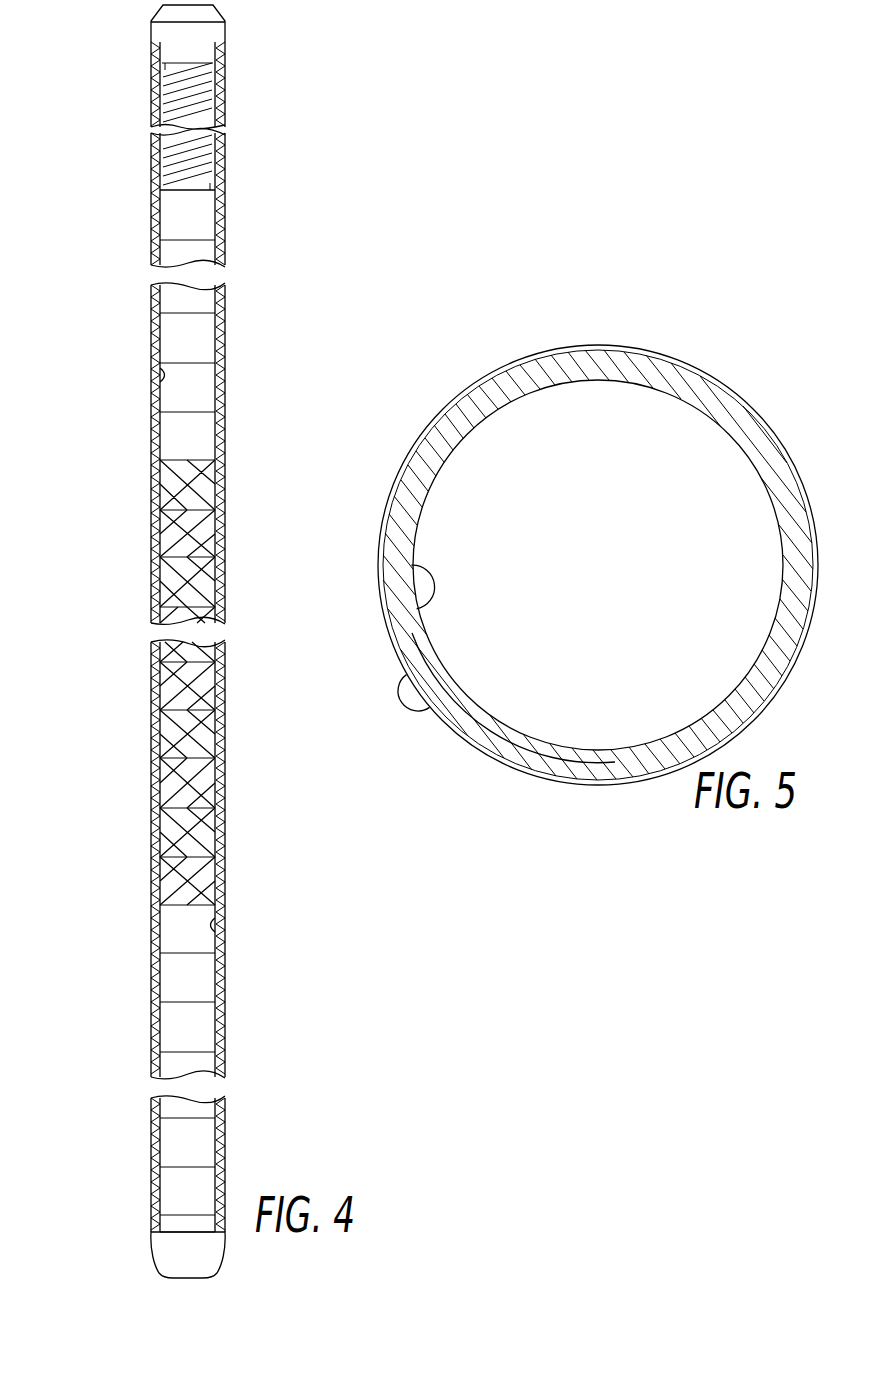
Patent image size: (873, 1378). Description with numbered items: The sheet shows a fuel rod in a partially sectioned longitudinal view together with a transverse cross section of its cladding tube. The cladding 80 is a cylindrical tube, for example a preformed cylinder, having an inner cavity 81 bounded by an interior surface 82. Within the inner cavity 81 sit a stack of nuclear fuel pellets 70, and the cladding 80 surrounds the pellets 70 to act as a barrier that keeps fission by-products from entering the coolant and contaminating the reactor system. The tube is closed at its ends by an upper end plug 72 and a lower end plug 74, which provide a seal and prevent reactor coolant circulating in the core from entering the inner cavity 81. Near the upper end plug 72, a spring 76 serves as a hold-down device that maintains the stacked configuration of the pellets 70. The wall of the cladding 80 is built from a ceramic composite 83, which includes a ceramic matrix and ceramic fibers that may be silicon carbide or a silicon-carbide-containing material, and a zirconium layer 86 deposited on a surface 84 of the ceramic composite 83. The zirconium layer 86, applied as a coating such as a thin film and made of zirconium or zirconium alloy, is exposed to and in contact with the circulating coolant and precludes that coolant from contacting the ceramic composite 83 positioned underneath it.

In FIG. 4, the nuclear fuel pellets 70 is at (165, 578).
In FIG. 4, the upper end plug 72 is at (151, 42).
In FIG. 4, the lower end plug 74 is at (152, 1246).
In FIG. 4, the spring 76 is at (151, 143).
In FIG. 4, the cladding 80 is at (219, 628).
In FIG. 5, the cladding 80 is at (800, 379).
In FIG. 4, the inner cavity 81 is at (181, 976).
In FIG. 4, the interior surface 82 is at (160, 376).
In FIG. 5, the interior surface 82 is at (405, 598).
In FIG. 4, the ceramic composite 83 is at (152, 268).
In FIG. 5, the ceramic composite 83 is at (594, 358).
In FIG. 4, the surface of the ceramic composite 84 is at (153, 229).
In FIG. 5, the surface of the ceramic composite 84 is at (468, 716).
In FIG. 4, the zirconium layer 86 is at (152, 190).
In FIG. 5, the zirconium layer 86 is at (790, 693).